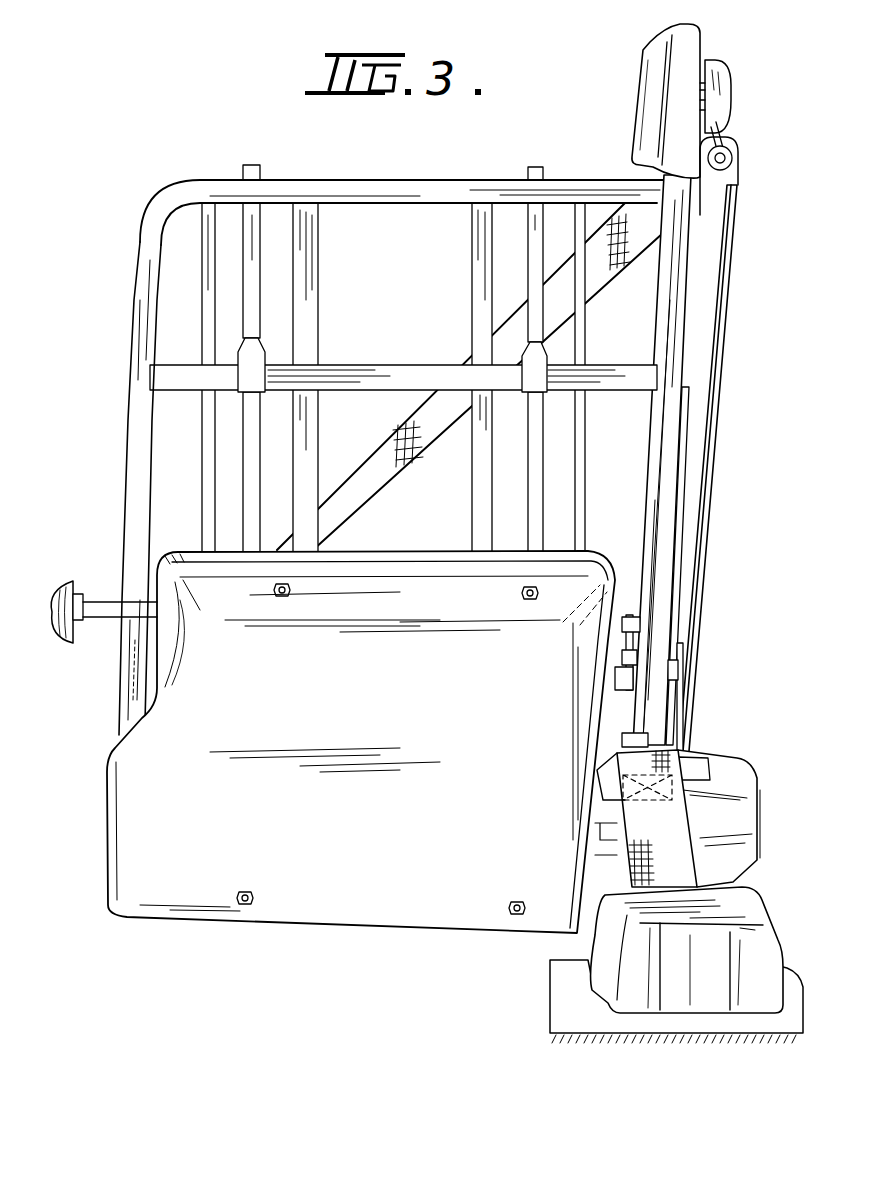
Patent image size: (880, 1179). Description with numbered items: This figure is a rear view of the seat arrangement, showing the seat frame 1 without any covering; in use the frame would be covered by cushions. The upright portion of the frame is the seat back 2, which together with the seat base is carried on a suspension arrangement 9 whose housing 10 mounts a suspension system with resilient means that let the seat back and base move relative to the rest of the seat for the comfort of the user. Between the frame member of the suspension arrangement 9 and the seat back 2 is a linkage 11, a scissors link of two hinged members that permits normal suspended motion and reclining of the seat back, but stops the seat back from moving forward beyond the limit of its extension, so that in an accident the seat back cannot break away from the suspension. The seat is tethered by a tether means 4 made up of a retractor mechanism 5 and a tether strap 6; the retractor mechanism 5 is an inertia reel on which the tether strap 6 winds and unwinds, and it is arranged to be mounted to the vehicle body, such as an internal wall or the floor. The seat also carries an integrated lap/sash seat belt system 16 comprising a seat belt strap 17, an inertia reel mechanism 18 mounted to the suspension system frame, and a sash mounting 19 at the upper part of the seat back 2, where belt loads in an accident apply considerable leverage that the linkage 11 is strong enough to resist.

The seat frame 1 is at (196, 170).
The seat back 2 is at (455, 190).
The tether means 4 is at (626, 877).
The retractor mechanism 5 is at (747, 896).
The tether strap 6 is at (634, 814).
The suspension arrangement 9 is at (261, 554).
The housing 10 is at (346, 680).
The linkage 11 is at (615, 652).
The integrated lap/sash seat belt system 16 is at (731, 281).
The seat belt strap 17 is at (716, 396).
The inertia reel mechanism 18 is at (723, 767).
The sash mounting 19 is at (722, 60).